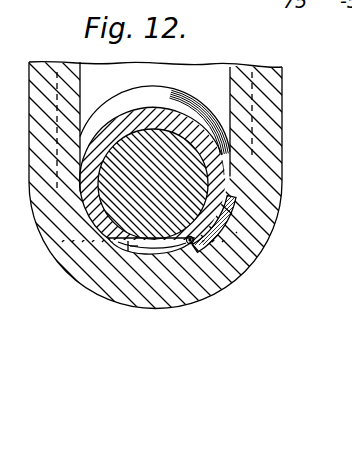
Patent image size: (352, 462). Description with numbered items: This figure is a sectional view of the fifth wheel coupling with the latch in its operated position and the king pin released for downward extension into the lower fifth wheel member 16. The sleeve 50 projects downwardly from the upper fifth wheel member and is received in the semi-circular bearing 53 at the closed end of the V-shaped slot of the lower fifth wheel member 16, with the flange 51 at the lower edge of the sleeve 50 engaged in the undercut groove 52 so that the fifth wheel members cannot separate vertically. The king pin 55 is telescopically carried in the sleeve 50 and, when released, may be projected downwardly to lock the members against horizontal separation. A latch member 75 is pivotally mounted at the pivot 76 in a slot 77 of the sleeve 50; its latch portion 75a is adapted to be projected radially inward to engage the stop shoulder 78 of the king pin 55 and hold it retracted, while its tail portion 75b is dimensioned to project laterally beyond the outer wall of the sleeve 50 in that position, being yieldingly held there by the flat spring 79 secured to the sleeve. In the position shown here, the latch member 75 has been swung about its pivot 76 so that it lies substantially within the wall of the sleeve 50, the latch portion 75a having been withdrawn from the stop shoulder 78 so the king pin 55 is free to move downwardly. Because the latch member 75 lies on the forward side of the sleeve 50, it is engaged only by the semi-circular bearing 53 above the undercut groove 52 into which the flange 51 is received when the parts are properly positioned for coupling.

The lower fifth wheel member 16 is at (268, 113).
The sleeve 50 is at (208, 143).
The flange 51 is at (153, 95).
The undercut groove 52 is at (230, 196).
The semi-circular bearing 53 is at (232, 236).
The king pin 55 is at (196, 160).
The latch member 75 is at (222, 229).
The latch portion 75a is at (220, 211).
The tail portion 75b is at (158, 250).
The pivot 76 is at (195, 248).
The slot 77 is at (128, 251).
The stop shoulder 78 is at (212, 182).
The flat spring 79 is at (133, 250).